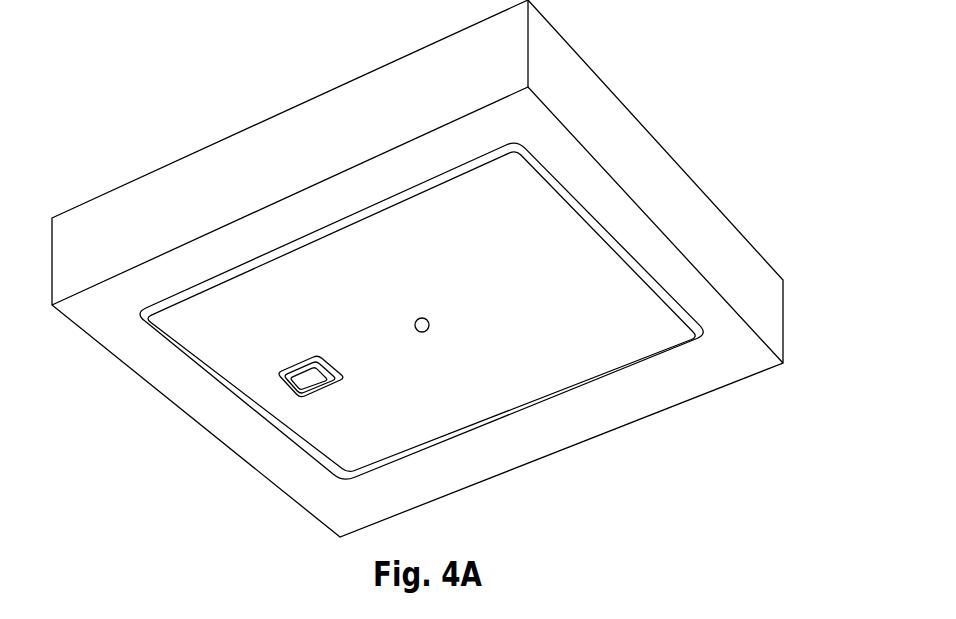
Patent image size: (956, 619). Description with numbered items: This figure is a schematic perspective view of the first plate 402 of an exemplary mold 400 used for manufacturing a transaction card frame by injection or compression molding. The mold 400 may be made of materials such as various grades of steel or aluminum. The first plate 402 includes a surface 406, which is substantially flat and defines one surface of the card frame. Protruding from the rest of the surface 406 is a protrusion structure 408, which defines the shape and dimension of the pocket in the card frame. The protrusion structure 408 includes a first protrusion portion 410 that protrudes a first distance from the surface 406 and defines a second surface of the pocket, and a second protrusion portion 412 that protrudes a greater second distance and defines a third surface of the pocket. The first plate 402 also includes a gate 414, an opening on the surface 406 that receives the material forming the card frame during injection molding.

The mold 400 is at (130, 36).
The first plate 402 is at (678, 165).
The surface 406 is at (650, 305).
The protrusion structure 408 is at (302, 346).
The first protrusion portion 410 is at (277, 378).
The second protrusion portion 412 is at (285, 386).
The gate 414 is at (428, 331).